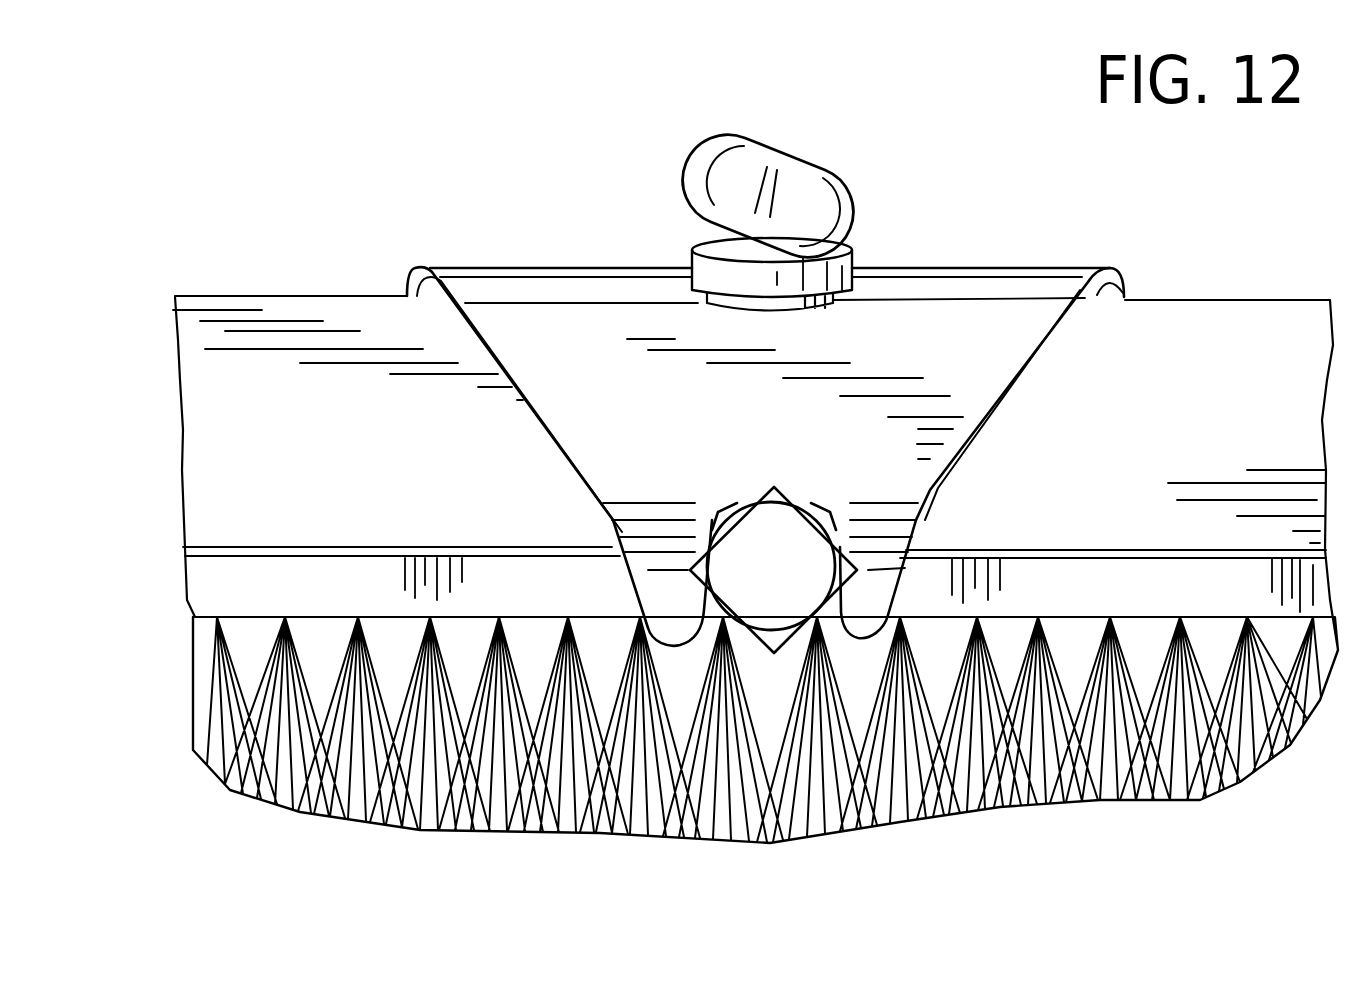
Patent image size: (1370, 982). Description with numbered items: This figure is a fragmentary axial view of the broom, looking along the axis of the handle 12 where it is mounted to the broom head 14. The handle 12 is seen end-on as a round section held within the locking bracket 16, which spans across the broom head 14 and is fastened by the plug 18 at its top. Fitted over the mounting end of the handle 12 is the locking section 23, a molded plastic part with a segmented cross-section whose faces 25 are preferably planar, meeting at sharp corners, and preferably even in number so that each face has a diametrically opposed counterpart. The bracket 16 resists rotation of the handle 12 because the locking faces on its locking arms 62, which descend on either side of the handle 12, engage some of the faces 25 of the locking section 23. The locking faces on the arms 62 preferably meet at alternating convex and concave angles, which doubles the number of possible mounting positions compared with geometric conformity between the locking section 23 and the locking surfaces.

The handle 12 is at (771, 566).
The broom head 14 is at (1235, 401).
The locking bracket 16 is at (993, 360).
The plug 18 is at (803, 190).
The locking section 23 is at (773, 487).
The faces 25 is at (750, 490).
The locking arms 62 is at (688, 617).